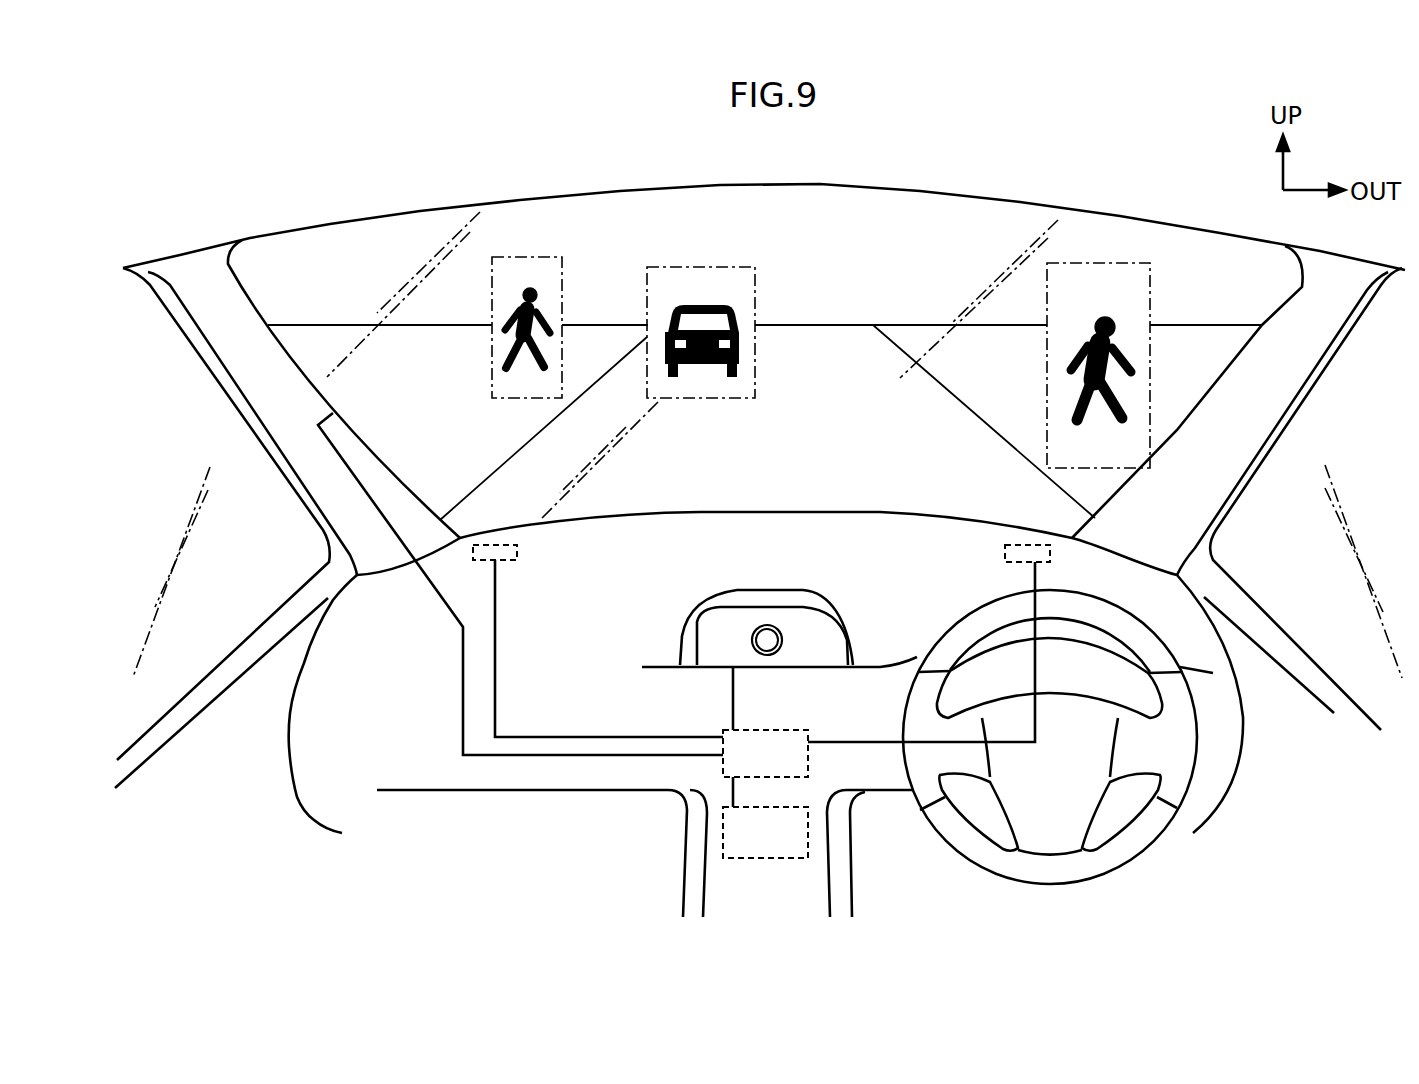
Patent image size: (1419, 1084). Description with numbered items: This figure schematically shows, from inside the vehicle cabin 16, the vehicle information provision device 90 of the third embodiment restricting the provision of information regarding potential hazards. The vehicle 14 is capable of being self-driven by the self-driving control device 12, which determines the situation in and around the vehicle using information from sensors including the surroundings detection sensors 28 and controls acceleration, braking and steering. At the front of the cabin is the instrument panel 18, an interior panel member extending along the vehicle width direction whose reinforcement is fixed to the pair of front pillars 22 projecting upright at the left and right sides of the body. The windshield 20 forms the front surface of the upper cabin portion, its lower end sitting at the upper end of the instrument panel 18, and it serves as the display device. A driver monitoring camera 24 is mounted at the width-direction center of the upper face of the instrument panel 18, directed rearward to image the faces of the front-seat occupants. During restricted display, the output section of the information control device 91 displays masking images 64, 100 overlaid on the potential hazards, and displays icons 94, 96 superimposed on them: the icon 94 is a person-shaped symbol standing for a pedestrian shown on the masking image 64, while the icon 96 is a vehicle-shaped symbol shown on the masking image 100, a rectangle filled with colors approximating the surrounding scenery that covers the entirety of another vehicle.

The self-driving control device 12 is at (752, 860).
The vehicle 14 is at (1185, 165).
The vehicle cabin 16 is at (933, 911).
The instrument panel 18 is at (872, 578).
The windshield 20 is at (337, 395).
The front pillars 22 is at (294, 490).
The driver monitoring camera 24 is at (773, 630).
The surroundings detection sensors 28 is at (517, 552).
The masking image 64 is at (530, 257).
The vehicle information provision device 90 is at (1052, 194).
The information control device 91 is at (790, 730).
The icon 94 is at (538, 307).
The icon 96 is at (707, 307).
The masking image 100 is at (663, 267).